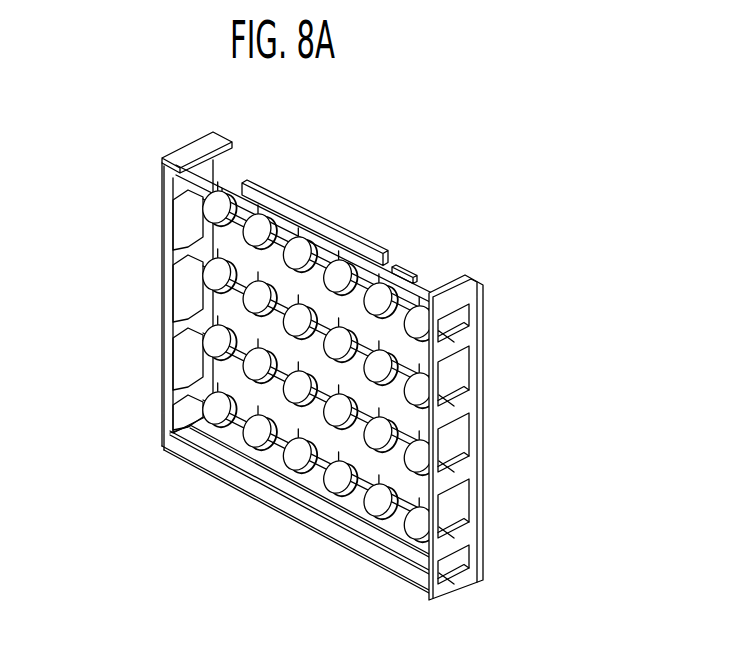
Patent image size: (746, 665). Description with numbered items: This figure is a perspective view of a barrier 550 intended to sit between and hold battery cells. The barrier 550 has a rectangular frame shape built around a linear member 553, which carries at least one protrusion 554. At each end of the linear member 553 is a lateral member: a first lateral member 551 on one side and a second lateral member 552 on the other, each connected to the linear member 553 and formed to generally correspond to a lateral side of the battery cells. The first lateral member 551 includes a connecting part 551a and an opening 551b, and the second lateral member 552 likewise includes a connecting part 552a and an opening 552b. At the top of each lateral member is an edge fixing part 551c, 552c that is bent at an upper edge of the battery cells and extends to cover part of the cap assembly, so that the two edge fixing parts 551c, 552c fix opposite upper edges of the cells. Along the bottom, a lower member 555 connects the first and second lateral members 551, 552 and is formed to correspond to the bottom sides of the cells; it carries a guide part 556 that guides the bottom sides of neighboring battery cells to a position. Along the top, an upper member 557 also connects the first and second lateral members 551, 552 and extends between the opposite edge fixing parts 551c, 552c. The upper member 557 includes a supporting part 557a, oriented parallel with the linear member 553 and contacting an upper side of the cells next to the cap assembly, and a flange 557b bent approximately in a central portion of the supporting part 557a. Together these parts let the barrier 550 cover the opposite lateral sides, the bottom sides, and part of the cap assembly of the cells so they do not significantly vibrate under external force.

The barrier 550 is at (516, 195).
The first lateral member 551 is at (63, 300).
The connecting part 551a is at (183, 262).
The opening 551b is at (188, 309).
The edge fixing part 551c is at (183, 153).
The second lateral member 552 is at (590, 305).
The connecting part 552a is at (460, 340).
The opening 552b is at (450, 372).
The edge fixing part 552c is at (460, 292).
The linear member 553 is at (368, 490).
The protrusion 554 is at (382, 510).
The lower member 555 is at (193, 455).
The guide part 556 is at (265, 489).
The upper member 557 is at (477, 217).
The supporting part 557a is at (391, 262).
The flange 557b is at (313, 222).